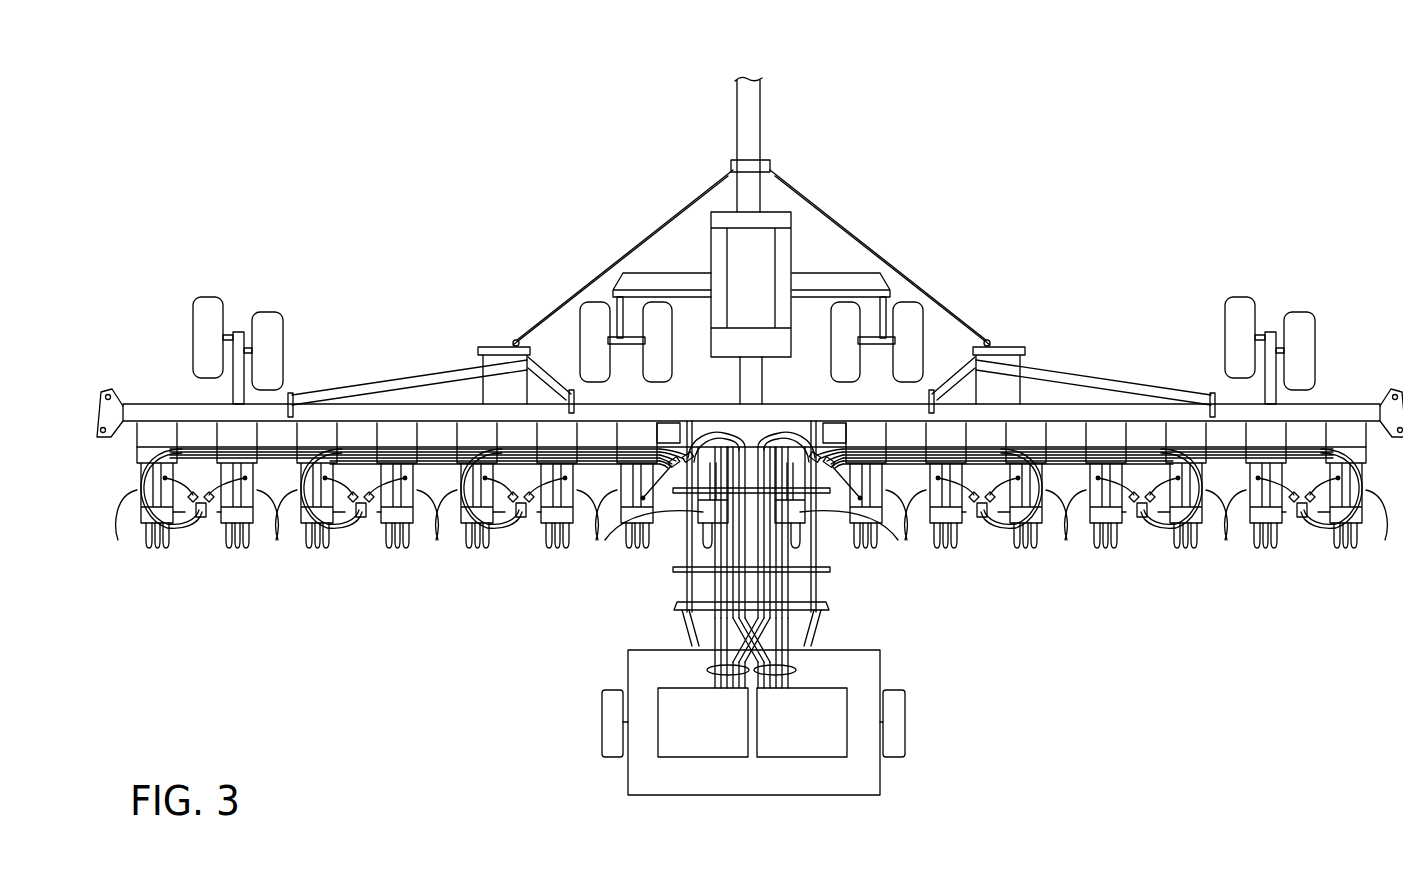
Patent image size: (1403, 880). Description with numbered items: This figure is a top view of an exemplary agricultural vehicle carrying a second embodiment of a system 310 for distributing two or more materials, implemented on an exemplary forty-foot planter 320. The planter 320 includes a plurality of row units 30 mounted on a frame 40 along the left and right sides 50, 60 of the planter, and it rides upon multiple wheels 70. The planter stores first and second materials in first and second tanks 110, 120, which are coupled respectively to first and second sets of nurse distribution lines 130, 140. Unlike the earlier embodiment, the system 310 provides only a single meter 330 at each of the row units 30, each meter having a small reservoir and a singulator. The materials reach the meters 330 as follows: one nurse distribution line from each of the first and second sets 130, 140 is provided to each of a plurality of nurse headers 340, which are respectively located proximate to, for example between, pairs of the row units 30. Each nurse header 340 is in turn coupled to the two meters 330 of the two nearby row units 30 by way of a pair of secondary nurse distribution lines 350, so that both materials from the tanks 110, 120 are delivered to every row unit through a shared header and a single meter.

The row units 30 is at (751, 548).
The frame 40 is at (268, 404).
The left side 50 is at (343, 737).
The right side 60 is at (1093, 737).
The wheels 70 is at (267, 302).
The first tank 110 is at (686, 733).
The second tank 120 is at (785, 733).
The first set of nurse distribution lines 130 is at (708, 670).
The second set of nurse distribution lines 140 is at (796, 670).
The system for distributing two or more materials 310 is at (1070, 190).
The planter 320 is at (435, 190).
The meter 330 is at (750, 530).
The nurse headers 340 is at (367, 462).
The secondary nurse distribution lines 350 is at (208, 518).